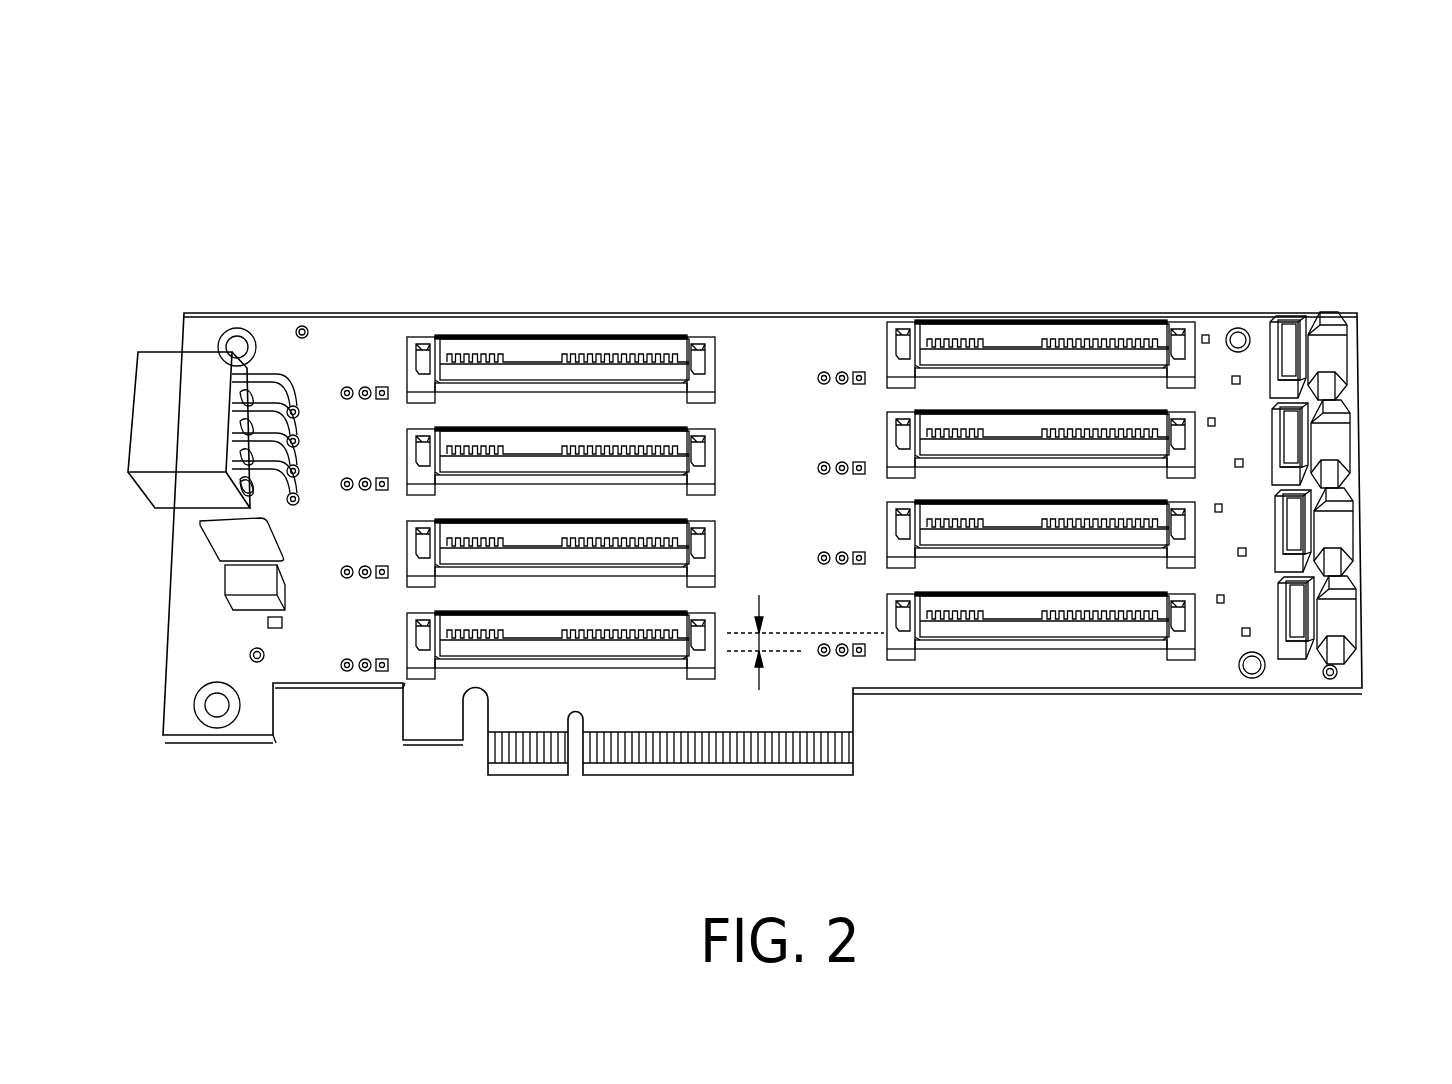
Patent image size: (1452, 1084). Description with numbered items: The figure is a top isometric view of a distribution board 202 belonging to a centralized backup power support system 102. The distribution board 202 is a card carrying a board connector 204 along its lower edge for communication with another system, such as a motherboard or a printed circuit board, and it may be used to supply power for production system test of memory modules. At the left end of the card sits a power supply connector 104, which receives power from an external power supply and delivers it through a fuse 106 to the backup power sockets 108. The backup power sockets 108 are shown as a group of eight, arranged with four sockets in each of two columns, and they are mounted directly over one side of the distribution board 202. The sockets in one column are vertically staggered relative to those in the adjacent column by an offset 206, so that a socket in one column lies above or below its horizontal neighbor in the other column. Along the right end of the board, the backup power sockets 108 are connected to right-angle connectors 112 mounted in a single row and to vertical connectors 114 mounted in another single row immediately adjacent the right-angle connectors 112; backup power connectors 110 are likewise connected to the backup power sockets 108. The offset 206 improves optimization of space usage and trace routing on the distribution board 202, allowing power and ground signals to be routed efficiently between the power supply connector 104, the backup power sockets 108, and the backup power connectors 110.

The centralized backup power support system 102 is at (434, 110).
The power supply connector 104 is at (180, 410).
The fuse 106 is at (250, 585).
The backup power sockets 108 is at (718, 303).
The backup power connectors 110 is at (1276, 296).
The right-angle connectors 112 is at (1323, 303).
The vertical connectors 114 is at (1295, 658).
The distribution board 202 is at (441, 794).
The board connector 204 is at (646, 782).
The offset 206 is at (760, 642).